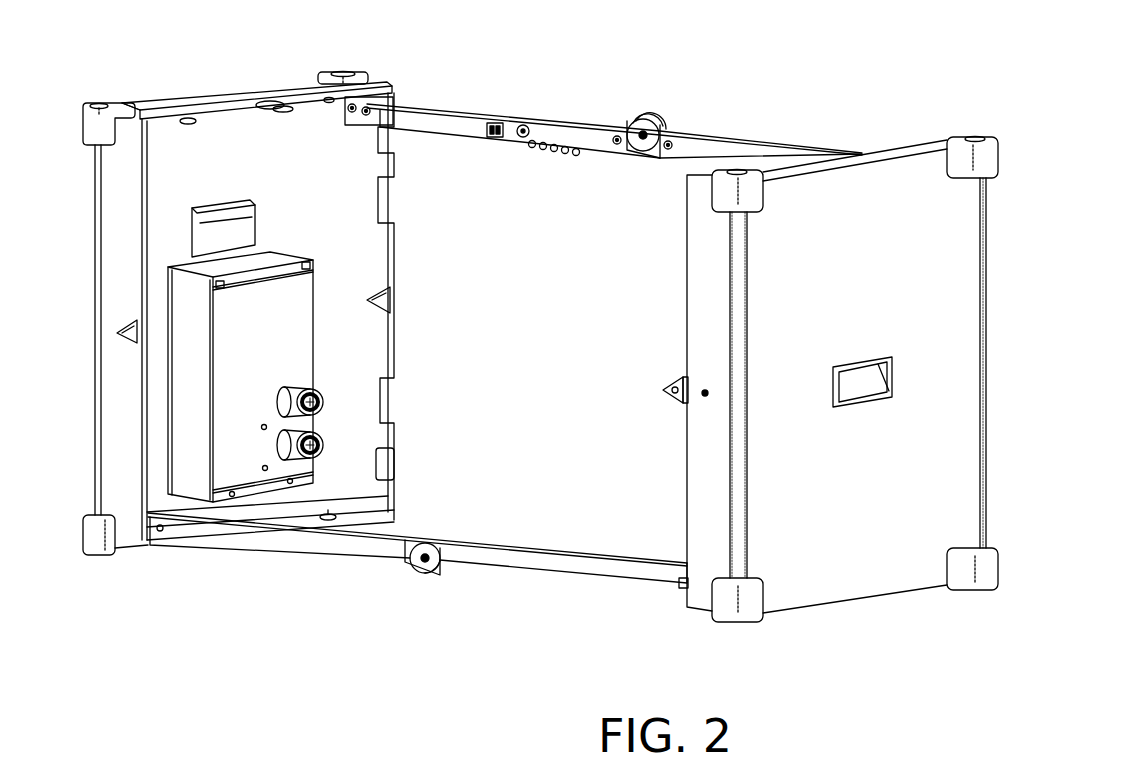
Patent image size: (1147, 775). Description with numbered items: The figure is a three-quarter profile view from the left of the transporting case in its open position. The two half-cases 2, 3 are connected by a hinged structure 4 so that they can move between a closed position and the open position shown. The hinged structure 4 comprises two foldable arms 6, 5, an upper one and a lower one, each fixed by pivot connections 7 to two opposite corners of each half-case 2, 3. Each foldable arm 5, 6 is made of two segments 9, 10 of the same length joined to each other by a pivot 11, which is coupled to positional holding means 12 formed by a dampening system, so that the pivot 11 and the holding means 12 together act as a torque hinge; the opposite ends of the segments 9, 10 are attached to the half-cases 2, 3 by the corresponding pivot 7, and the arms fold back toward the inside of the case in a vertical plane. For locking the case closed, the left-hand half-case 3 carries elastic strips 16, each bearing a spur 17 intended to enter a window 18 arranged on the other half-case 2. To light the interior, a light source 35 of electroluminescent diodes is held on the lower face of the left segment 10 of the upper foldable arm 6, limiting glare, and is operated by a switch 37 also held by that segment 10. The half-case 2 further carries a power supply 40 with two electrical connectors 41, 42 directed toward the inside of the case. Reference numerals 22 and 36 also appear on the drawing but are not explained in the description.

The half-case 2 is at (163, 107).
The half-case 3 is at (900, 143).
The hinged structure 4 is at (155, 592).
The foldable arm 5 is at (460, 531).
The foldable arm 6 is at (642, 160).
The pivot connection 7 is at (397, 100).
The segment 9 is at (772, 158).
The segment 10 is at (594, 134).
The pivot 11 is at (645, 117).
The positional holding means 12 is at (672, 128).
The elastic strip 16 is at (683, 378).
The spur 17 is at (665, 397).
The window 18 is at (395, 296).
The fastening point 22 is at (188, 125).
The light source 35 is at (585, 162).
The indicator light 36 is at (563, 153).
The switch 37 is at (491, 141).
The power supply 40 is at (278, 302).
The electrical connector 41 is at (322, 401).
The electrical connector 42 is at (322, 445).